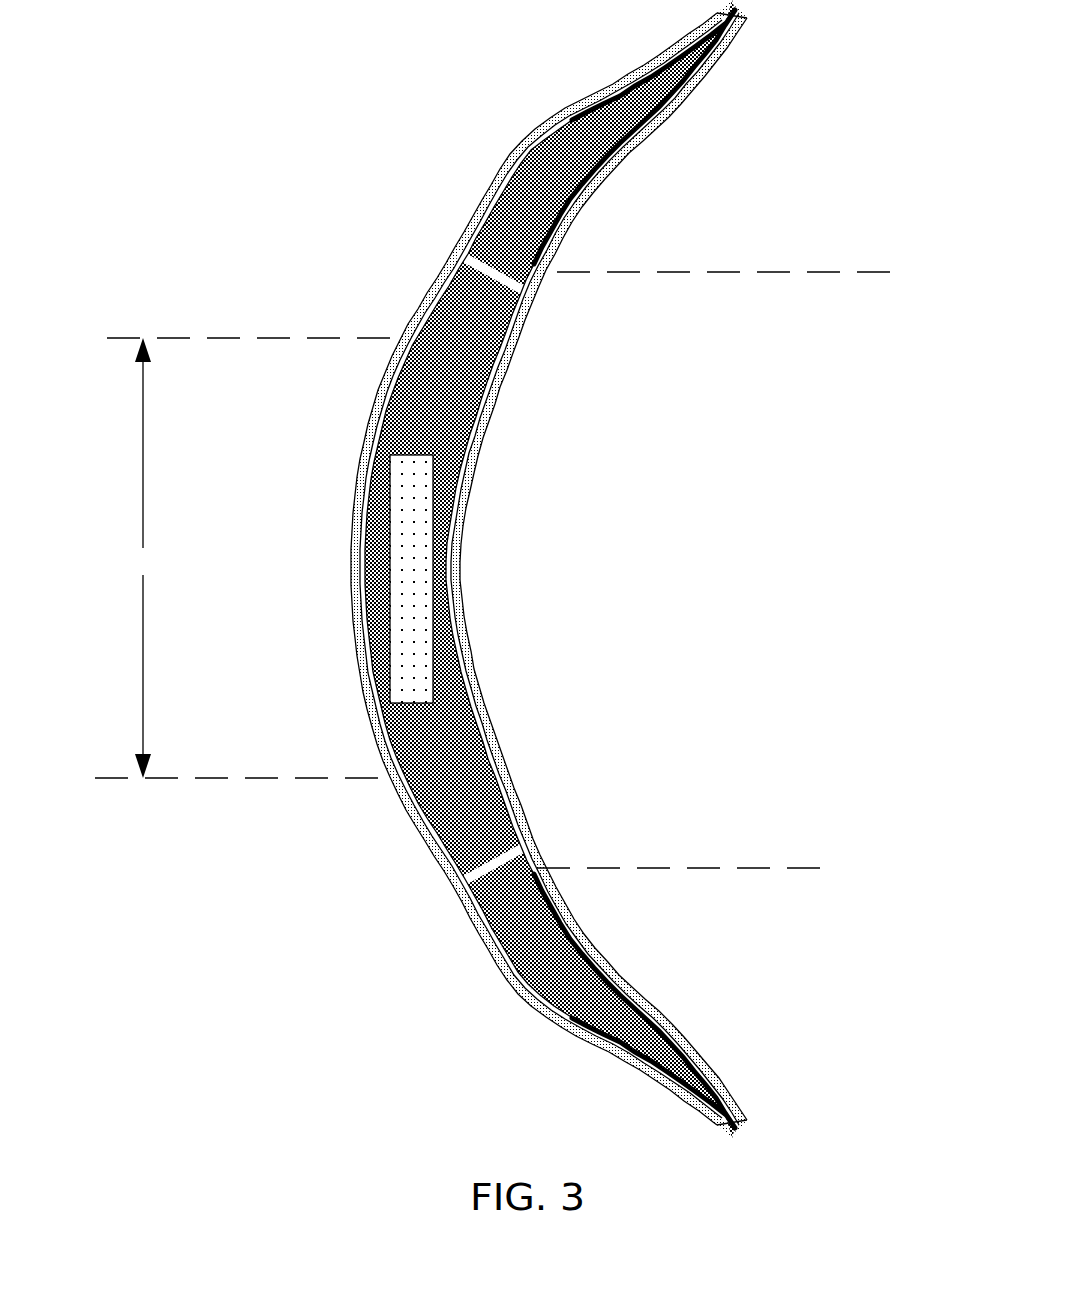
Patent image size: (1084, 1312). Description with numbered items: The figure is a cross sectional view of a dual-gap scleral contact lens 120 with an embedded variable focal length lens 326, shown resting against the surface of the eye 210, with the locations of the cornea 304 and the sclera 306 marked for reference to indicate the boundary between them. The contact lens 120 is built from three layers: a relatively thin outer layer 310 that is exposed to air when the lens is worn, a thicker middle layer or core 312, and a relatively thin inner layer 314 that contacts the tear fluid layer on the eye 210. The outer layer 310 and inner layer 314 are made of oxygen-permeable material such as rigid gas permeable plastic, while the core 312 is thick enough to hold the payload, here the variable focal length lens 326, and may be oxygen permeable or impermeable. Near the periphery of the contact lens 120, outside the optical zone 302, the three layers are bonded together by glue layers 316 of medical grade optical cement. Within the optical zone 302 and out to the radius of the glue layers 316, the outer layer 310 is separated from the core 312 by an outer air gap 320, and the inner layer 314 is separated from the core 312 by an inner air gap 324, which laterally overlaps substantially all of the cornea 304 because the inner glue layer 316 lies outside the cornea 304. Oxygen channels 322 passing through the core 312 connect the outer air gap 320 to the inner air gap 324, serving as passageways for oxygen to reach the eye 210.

The contact lens 120 is at (938, 970).
The eye 210 is at (835, 570).
The optical zone 302 is at (225, 558).
The cornea 304 is at (732, 572).
The sclera 306 is at (739, 259).
The outer layer 310 is at (377, 418).
The core 312 is at (453, 808).
The inner layer 314 is at (467, 443).
The glue layers 316 is at (653, 127).
The outer air gap 320 is at (398, 340).
The oxygen channels 322 is at (487, 268).
The inner air gap 324 is at (493, 357).
The variable focal length lens 326 is at (415, 622).